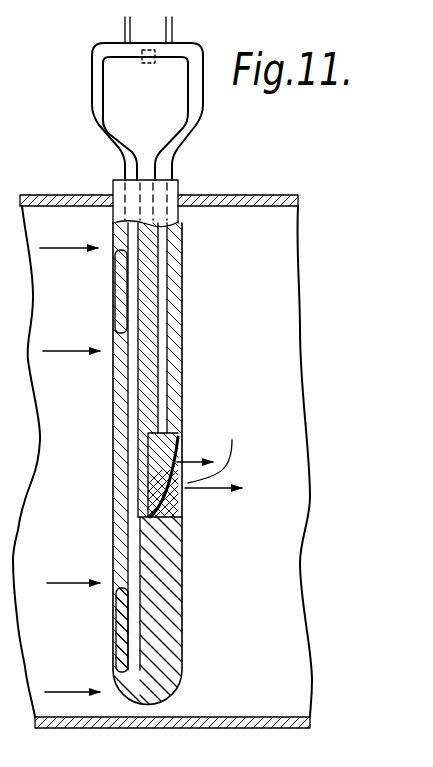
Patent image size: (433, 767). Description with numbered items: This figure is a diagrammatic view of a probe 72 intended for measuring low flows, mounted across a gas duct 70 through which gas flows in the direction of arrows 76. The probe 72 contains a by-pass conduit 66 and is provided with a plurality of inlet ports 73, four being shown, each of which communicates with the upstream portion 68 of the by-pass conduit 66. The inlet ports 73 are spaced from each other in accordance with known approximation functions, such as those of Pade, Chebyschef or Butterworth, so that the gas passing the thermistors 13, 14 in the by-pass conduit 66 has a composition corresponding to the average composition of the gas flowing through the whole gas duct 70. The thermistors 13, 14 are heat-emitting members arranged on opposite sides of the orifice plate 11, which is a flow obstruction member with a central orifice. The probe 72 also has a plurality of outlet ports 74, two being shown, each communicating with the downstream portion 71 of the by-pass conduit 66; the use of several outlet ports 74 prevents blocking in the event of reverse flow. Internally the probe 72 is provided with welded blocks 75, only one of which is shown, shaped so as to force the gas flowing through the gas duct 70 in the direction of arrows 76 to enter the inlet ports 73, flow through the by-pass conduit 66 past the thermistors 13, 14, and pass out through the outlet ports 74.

The orifice plate 11 is at (148, 60).
The thermistor 13 is at (140, 50).
The thermistor 14 is at (173, 44).
The by-pass conduit 66 is at (203, 102).
The upstream portion of the by-pass conduit 68 is at (137, 527).
The gas duct 70 is at (267, 207).
The downstream portion of the by-pass conduit 71 is at (165, 385).
The probe 72 is at (165, 655).
The inlet ports 73 is at (120, 340).
The outlet ports 74 is at (185, 458).
The welded blocks 75 is at (182, 536).
The arrows 76 is at (72, 352).